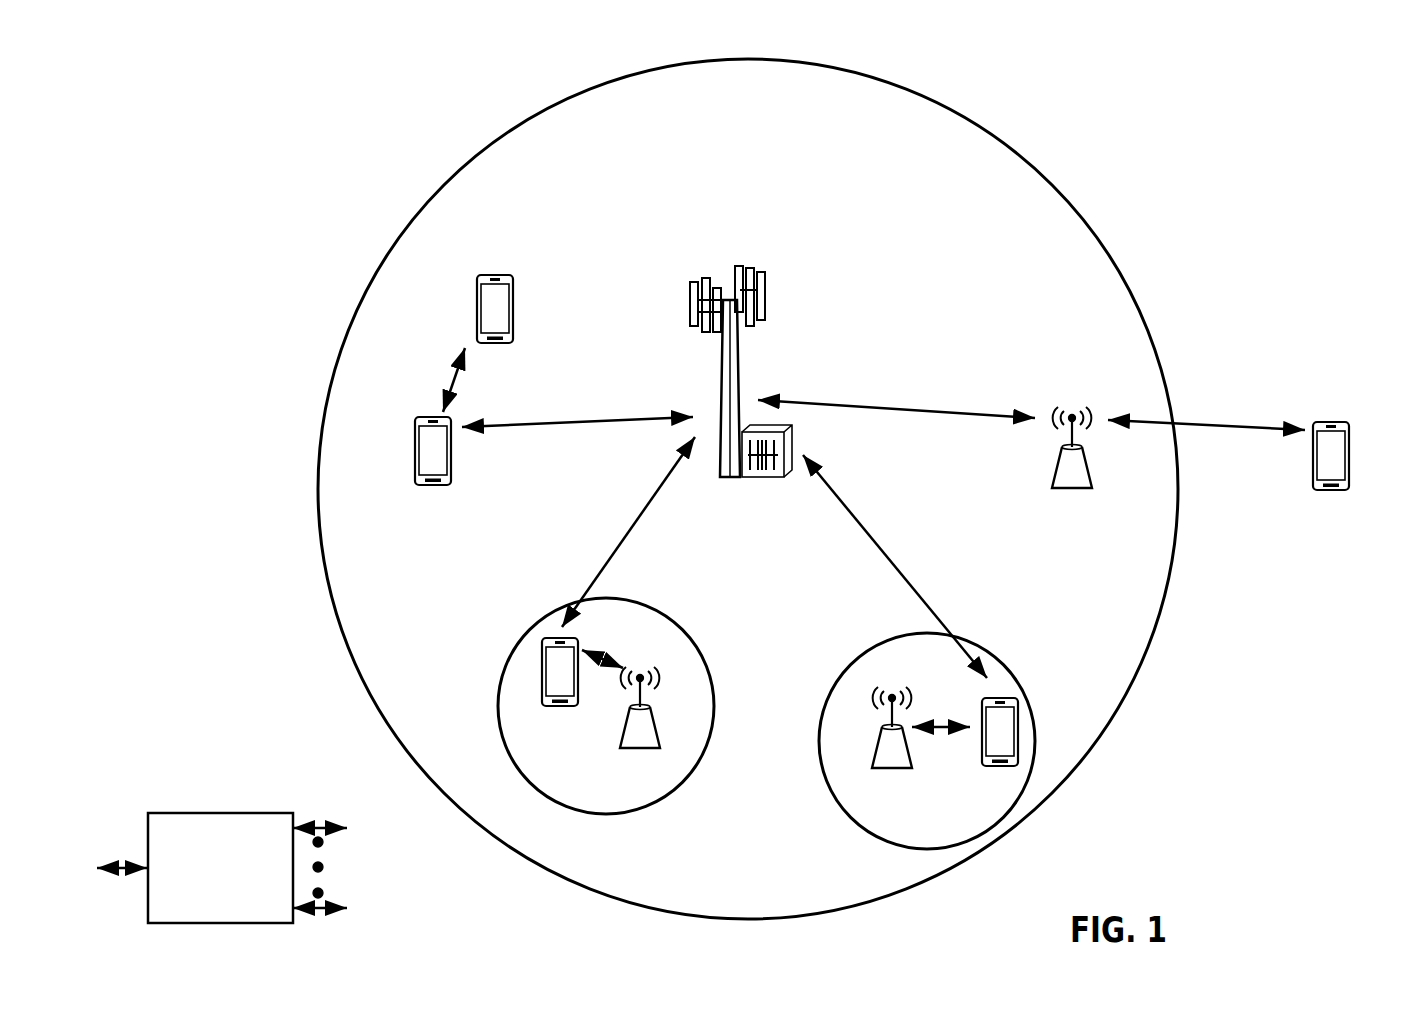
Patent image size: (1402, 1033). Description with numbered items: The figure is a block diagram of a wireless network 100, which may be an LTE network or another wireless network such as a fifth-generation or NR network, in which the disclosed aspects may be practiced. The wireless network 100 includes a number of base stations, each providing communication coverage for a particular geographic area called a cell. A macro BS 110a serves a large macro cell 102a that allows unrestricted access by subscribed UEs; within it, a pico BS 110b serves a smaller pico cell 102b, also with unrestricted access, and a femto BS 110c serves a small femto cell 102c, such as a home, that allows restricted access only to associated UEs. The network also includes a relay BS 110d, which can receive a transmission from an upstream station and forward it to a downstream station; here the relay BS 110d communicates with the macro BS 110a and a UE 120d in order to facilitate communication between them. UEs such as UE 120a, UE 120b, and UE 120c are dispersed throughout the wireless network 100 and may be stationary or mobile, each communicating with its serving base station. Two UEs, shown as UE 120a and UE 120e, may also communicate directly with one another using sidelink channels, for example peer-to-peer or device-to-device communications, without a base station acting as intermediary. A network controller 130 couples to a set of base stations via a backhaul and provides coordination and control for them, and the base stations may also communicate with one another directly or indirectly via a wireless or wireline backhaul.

The wireless network 100 is at (205, 54).
The macro cell 102a is at (1036, 163).
The pico cell 102b is at (699, 629).
The femto cell 102c is at (865, 652).
The macro BS 110a is at (734, 262).
The pico BS 110b is at (658, 738).
The femto BS 110c is at (876, 754).
The relay BS 110d is at (1073, 405).
The UE 120a is at (415, 447).
The UE 120b is at (545, 708).
The UE 120c is at (982, 770).
The UE 120d is at (1345, 420).
The UE 120e is at (477, 298).
The network controller 130 is at (218, 812).